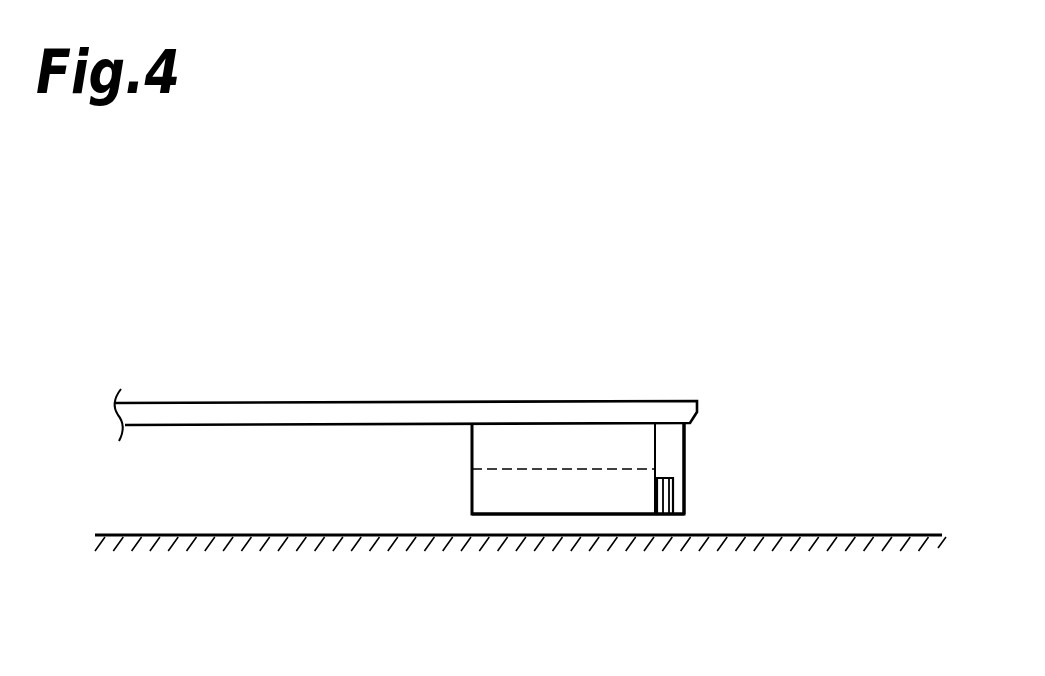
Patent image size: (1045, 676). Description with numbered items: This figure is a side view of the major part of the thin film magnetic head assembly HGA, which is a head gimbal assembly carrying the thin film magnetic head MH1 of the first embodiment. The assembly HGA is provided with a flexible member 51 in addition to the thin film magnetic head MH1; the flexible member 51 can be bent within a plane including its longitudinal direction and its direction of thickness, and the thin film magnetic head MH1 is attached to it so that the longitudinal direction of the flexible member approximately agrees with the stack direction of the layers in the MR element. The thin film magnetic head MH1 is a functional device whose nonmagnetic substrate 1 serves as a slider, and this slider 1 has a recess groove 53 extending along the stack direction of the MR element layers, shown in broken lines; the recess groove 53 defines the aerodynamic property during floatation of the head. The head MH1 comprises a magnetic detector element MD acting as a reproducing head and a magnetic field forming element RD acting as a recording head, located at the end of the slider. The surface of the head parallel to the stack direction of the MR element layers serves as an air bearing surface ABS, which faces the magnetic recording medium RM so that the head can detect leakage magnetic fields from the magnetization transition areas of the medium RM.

The flexible member 51 is at (305, 410).
The nonmagnetic substrate 1 is at (600, 445).
The recess groove 53 is at (530, 470).
The thin film magnetic head assembly HGA is at (471, 382).
The thin film magnetic head MH1 is at (702, 465).
The magnetic field forming element RD is at (673, 492).
The magnetic detector element MD is at (657, 500).
The air bearing surface ABS is at (661, 514).
The magnetic recording medium RM is at (870, 534).